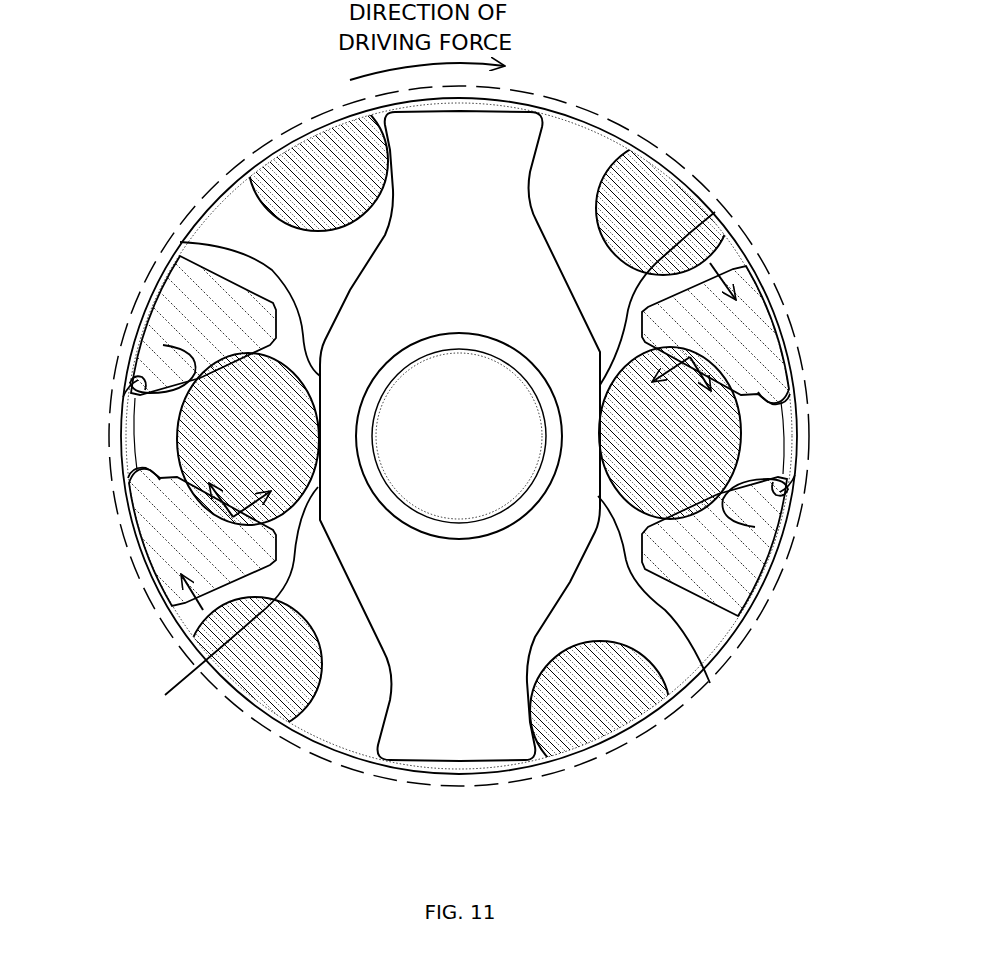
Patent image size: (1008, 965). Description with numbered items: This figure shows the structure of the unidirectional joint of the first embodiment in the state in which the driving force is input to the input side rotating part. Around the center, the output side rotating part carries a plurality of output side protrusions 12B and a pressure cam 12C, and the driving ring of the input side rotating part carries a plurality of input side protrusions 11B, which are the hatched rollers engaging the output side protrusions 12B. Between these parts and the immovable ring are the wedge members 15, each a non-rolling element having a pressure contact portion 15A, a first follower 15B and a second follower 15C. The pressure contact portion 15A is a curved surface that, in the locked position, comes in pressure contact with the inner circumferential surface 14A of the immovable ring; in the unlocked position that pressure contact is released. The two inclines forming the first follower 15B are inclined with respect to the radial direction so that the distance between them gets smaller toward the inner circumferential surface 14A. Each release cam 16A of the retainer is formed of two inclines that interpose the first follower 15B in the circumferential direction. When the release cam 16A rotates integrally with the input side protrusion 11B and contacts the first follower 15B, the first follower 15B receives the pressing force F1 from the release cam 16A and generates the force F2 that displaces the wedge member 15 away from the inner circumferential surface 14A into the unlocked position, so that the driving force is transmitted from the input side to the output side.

The input side protrusion 11B is at (300, 160).
The output side protrusion 12B is at (498, 128).
The pressure cam 12C is at (183, 235).
The inner circumferential surface 14A is at (765, 607).
The wedge member 15 is at (147, 430).
The pressure contact portion 15A is at (123, 397).
The first follower 15B is at (163, 345).
The second follower 15C is at (297, 345).
The release cam 16A is at (130, 383).
The pressing force F1 is at (177, 550).
The force for displacing the wedge member to the unlocked position F2 is at (220, 550).